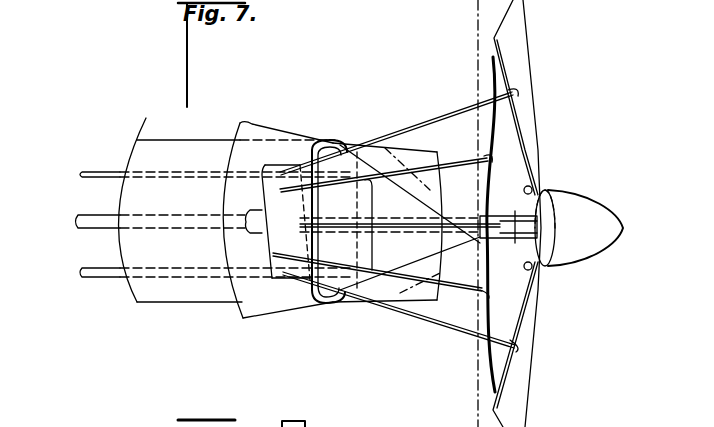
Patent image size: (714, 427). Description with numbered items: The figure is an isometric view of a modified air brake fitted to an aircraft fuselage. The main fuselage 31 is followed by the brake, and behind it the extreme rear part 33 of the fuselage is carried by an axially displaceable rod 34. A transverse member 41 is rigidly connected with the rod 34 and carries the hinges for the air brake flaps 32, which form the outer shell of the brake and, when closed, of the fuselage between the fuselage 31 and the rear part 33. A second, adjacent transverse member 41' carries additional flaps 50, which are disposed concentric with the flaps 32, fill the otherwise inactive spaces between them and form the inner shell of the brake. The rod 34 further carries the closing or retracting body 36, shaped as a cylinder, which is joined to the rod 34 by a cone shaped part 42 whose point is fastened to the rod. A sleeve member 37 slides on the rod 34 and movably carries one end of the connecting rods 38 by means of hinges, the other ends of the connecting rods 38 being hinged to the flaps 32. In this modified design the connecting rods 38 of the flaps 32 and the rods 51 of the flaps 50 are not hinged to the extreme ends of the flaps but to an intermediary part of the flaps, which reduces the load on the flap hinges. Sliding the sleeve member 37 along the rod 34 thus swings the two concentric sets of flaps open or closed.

The fuselage 31 is at (250, 133).
The flaps 32 is at (520, 52).
The rear part of the fuselage 33 is at (612, 228).
The rod 34 is at (76, 219).
The closing or retracting body 36 is at (135, 138).
The sleeve member 37 is at (247, 235).
The connecting rods 38 is at (440, 190).
The transverse member 41 is at (449, 216).
The transverse member 41' is at (564, 204).
The cone shaped part 42 is at (363, 167).
The additional flaps 50 is at (505, 125).
The rods 51 is at (357, 240).